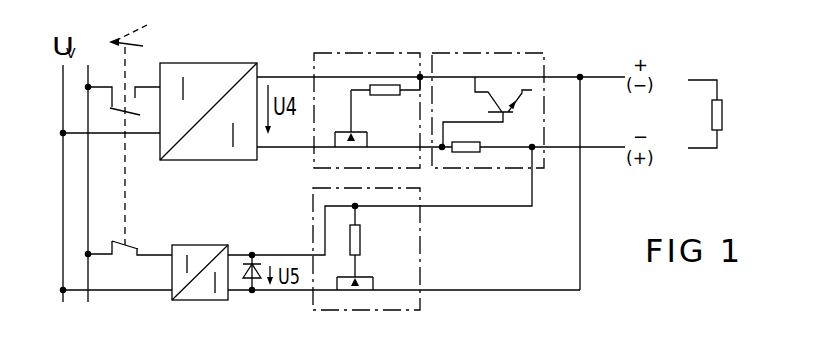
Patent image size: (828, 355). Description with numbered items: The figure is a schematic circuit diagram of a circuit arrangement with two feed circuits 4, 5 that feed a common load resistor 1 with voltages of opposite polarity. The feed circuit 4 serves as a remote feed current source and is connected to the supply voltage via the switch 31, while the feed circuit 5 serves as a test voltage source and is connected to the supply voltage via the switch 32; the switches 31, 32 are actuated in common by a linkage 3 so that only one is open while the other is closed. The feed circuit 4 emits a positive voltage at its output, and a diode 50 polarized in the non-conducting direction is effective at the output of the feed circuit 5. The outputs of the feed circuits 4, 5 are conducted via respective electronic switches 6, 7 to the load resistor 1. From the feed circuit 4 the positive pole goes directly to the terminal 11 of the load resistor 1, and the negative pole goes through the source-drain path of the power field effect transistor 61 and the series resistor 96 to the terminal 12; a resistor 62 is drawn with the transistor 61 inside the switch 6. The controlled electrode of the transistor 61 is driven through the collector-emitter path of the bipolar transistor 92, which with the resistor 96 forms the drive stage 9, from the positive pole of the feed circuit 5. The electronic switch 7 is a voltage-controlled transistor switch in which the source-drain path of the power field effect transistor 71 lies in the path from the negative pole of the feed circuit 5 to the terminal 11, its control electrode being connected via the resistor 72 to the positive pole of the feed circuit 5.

The load resistor 1 is at (723, 117).
The actuator / switch linkage 3 is at (128, 135).
The feed circuit 4 is at (219, 98).
The feed circuit 5 is at (352, 228).
The electronic switch 6 is at (385, 60).
The electronic switch 7 is at (374, 249).
The output switching circuit 9 is at (472, 60).
The terminal 11 is at (693, 82).
The terminal 12 is at (693, 146).
The switch 31 is at (124, 107).
The switch 32 is at (130, 235).
The diode 50 is at (257, 253).
The power field effect transistor 61 is at (346, 118).
The resistor 62 is at (385, 102).
The power field effect transistor 71 is at (367, 278).
The resistor 72 is at (367, 240).
The bipolar transistor 92 is at (487, 112).
The resistor 96 is at (477, 137).